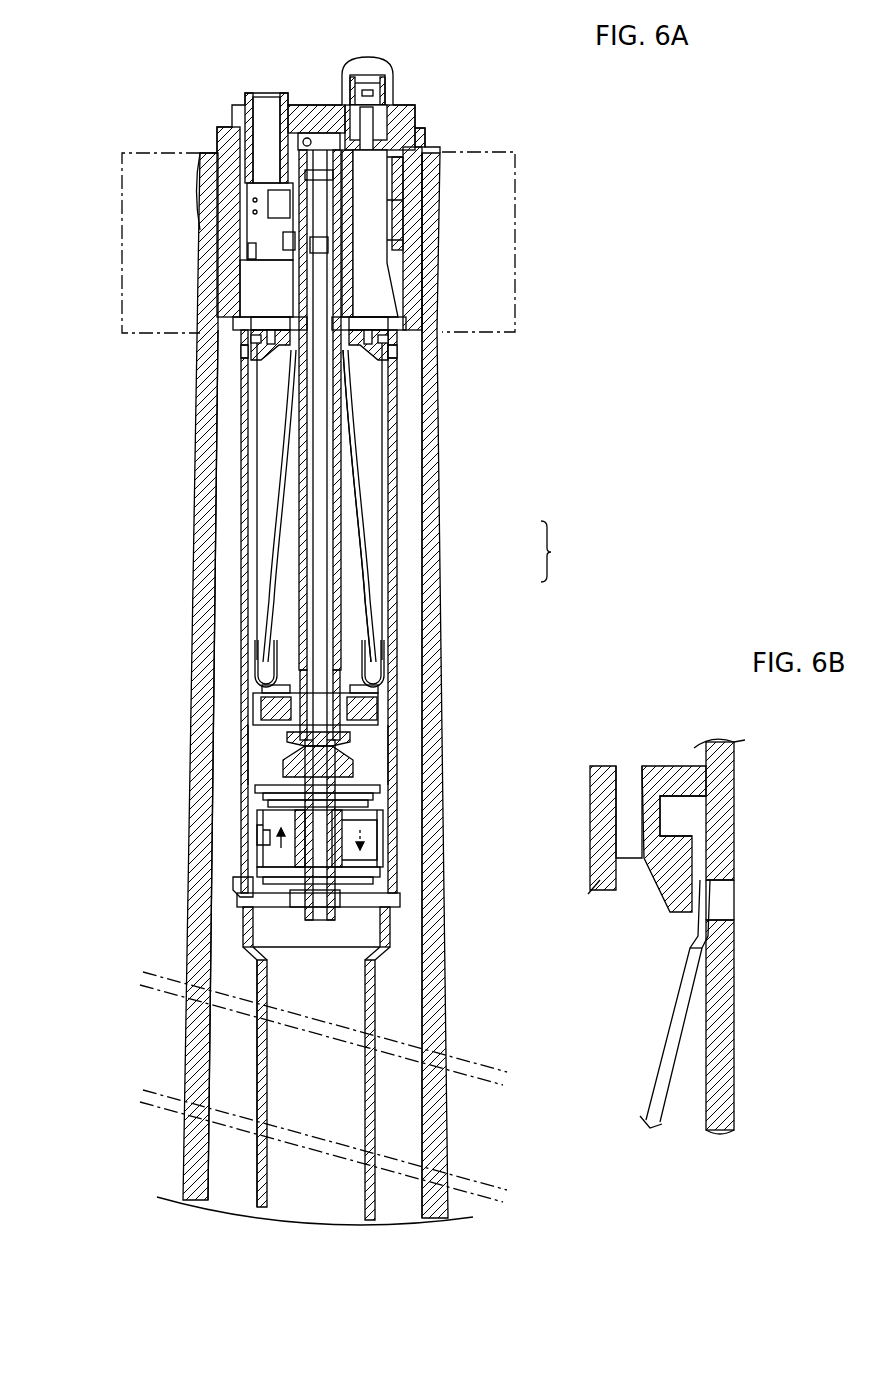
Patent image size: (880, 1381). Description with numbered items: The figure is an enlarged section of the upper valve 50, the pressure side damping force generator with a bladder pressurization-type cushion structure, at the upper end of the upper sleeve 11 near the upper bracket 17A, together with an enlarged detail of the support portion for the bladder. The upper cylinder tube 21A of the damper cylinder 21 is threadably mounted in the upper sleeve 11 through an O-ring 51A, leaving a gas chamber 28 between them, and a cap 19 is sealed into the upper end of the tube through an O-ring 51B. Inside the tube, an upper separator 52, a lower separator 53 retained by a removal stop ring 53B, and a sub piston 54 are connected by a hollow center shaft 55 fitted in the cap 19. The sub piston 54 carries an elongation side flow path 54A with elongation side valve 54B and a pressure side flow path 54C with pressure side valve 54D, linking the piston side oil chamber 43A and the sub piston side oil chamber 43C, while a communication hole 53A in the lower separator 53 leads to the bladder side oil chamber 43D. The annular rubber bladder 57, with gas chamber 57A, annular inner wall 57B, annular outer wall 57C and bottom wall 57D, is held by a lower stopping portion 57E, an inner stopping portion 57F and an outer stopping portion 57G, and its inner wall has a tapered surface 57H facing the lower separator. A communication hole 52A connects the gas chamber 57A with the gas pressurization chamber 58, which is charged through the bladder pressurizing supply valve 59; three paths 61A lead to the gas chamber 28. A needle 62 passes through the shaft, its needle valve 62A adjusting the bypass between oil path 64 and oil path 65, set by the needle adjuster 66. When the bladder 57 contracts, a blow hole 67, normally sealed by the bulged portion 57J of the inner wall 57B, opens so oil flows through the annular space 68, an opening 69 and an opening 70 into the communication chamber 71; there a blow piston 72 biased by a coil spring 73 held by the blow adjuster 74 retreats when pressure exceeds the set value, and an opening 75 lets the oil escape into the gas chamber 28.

In FIG. 6A, the upper sleeve 11 is at (200, 1052).
In FIG. 6A, the upper bracket 17A is at (122, 295).
In FIG. 6A, the cap 19 is at (415, 110).
In FIG. 6A, the damper cylinder 21 is at (257, 1155).
In FIG. 6A, the upper cylinder tube 21A is at (238, 550).
In FIG. 6A, the gas chamber 28 is at (407, 400).
In FIG. 6A, the piston side oil chamber 43A is at (333, 1107).
In FIG. 6A, the sub piston side oil chamber 43C is at (367, 752).
In FIG. 6A, the bladder side oil chamber 43D is at (283, 663).
In FIG. 6A, the upper valve 50 is at (403, 790).
In FIG. 6A, the O-ring 51A is at (415, 168).
In FIG. 6A, the O-ring 51B is at (422, 137).
In FIG. 6A, the upper separator 52 is at (415, 340).
In FIG. 6B, the upper separator 52 is at (676, 760).
In FIG. 6A, the communication hole 52A is at (393, 318).
In FIG. 6B, the communication hole 52A is at (628, 778).
In FIG. 6A, the lower separator 53 is at (377, 718).
In FIG. 6A, the communication hole 53A is at (282, 707).
In FIG. 6A, the removal stop ring 53B is at (282, 697).
In FIG. 6A, the sub piston 54 is at (377, 837).
In FIG. 6A, the elongation side flow path 54A is at (347, 857).
In FIG. 6A, the elongation side valve 54B is at (400, 885).
In FIG. 6A, the pressure side flow path 54C is at (268, 837).
In FIG. 6A, the pressure side valve 54D is at (267, 807).
In FIG. 6A, the center shaft 55 is at (342, 653).
In FIG. 6B, the center shaft 55 is at (718, 998).
In FIG. 6A, the bladder 57 is at (563, 551).
In FIG. 6A, the gas chamber 57A is at (368, 427).
In FIG. 6A, the annular inner wall 57B is at (368, 537).
In FIG. 6B, the annular inner wall 57B is at (666, 1026).
In FIG. 6A, the annular outer wall 57C is at (392, 567).
In FIG. 6A, the bottom wall 57D is at (383, 687).
In FIG. 6A, the lower stopping portion 57E is at (382, 707).
In FIG. 6A, the inner stopping portion 57F is at (363, 317).
In FIG. 6B, the inner stopping portion 57F is at (694, 816).
In FIG. 6A, the outer stopping portion 57G is at (393, 332).
In FIG. 6A, the tapered surface 57H is at (353, 625).
In FIG. 6B, the bulged portion 57J is at (696, 940).
In FIG. 6A, the gas pressurization chamber 58 is at (358, 267).
In FIG. 6A, the bladder pressurizing supply valve 59 is at (393, 75).
In FIG. 6A, the paths 61A is at (392, 182).
In FIG. 6A, the needle 62 is at (317, 395).
In FIG. 6A, the needle valve 62A is at (297, 755).
In FIG. 6A, the oil path 64 is at (320, 873).
In FIG. 6A, the oil path 65 is at (298, 772).
In FIG. 6A, the needle adjuster 66 is at (308, 105).
In FIG. 6A, the blow hole 67 is at (258, 353).
In FIG. 6B, the blow hole 67 is at (714, 904).
In FIG. 6A, the annular space 68 is at (307, 313).
In FIG. 6A, the opening 69 is at (287, 270).
In FIG. 6A, the opening 70 is at (295, 243).
In FIG. 6A, the communication chamber 71 is at (285, 237).
In FIG. 6A, the blow piston 72 is at (287, 205).
In FIG. 6A, the coil spring 73 is at (213, 160).
In FIG. 6A, the blow adjuster 74 is at (267, 125).
In FIG. 6A, the opening 75 is at (252, 258).